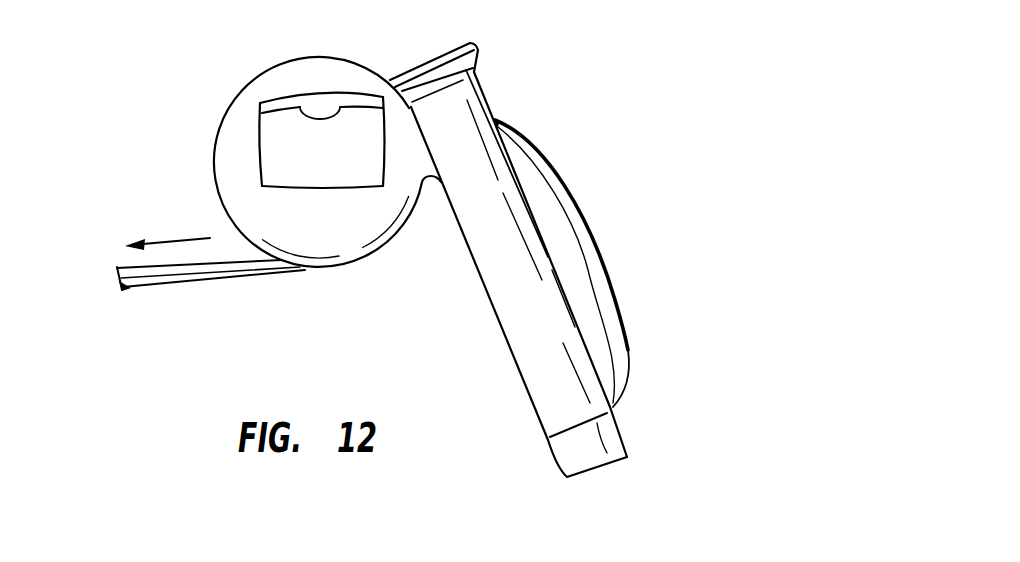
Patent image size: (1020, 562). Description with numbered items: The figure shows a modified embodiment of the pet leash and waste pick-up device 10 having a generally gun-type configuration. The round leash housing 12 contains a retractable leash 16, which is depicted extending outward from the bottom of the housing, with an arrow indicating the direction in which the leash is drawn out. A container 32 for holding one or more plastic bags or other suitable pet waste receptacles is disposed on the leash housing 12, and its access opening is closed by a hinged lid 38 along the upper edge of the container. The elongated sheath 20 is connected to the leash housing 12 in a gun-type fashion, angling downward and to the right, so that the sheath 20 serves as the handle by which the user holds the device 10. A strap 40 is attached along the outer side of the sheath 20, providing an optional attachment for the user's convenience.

The pet leash and waste pick-up device 10 is at (580, 86).
The leash housing 12 is at (240, 111).
The leash 16 is at (227, 277).
The sheath 20 is at (514, 329).
The container 32 is at (264, 146).
The hinged lid 38 is at (283, 103).
The strap 40 is at (594, 253).